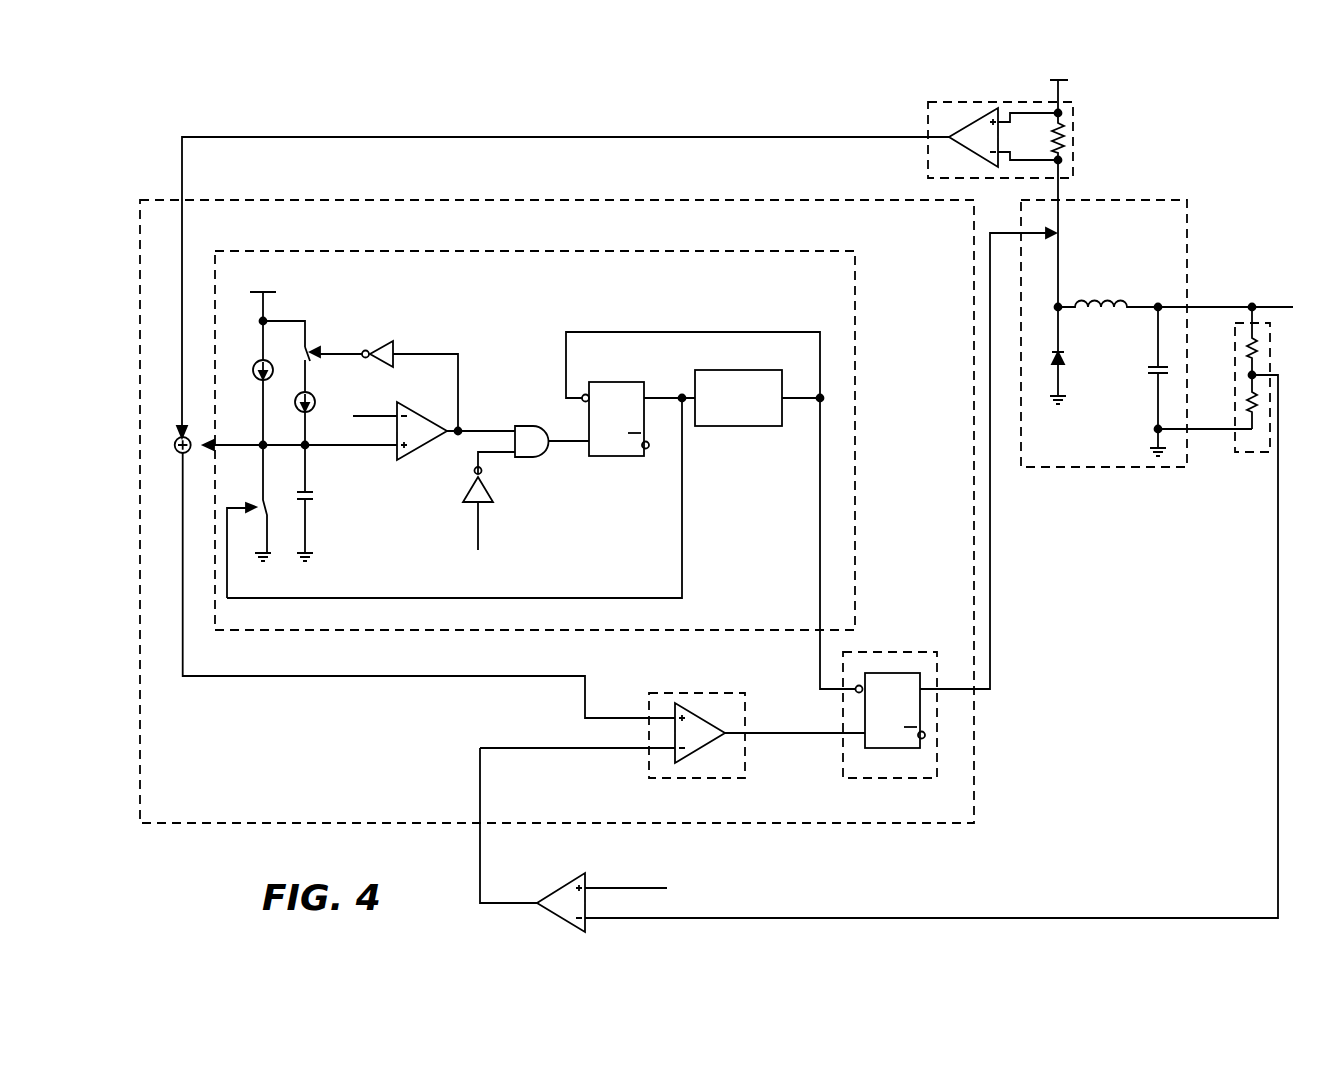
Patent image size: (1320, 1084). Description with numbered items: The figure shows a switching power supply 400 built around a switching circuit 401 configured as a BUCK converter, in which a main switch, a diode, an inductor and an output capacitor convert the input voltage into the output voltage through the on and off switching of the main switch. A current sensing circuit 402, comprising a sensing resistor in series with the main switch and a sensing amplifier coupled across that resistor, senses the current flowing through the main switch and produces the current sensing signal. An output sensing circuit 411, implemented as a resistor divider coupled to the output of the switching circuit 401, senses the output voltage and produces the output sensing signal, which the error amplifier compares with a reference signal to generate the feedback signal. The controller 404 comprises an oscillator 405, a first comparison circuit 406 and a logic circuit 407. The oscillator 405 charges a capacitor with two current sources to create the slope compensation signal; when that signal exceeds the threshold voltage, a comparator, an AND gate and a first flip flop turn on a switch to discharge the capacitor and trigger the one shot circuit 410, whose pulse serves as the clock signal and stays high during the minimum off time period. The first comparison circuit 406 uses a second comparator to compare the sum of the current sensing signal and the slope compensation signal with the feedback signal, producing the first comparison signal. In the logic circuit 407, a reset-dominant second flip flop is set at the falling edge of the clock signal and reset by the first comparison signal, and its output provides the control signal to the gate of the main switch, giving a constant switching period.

The switching power supply 400 is at (1281, 120).
The switching circuit 401 is at (1060, 469).
The current sensing circuit 402 is at (1073, 158).
The controller 404 is at (188, 824).
The oscillator 405 is at (255, 631).
The first comparison circuit 406 is at (675, 778).
The logic circuit 407 is at (870, 778).
The one shot circuit 410 is at (780, 421).
The output sensing circuit 411 is at (1250, 458).